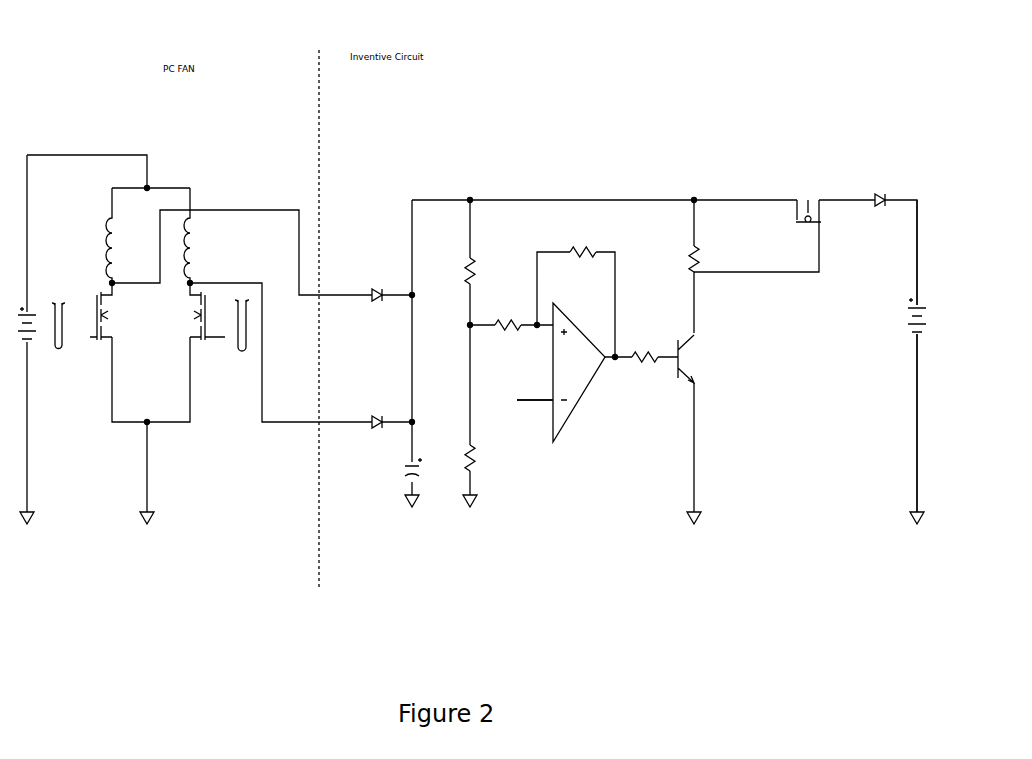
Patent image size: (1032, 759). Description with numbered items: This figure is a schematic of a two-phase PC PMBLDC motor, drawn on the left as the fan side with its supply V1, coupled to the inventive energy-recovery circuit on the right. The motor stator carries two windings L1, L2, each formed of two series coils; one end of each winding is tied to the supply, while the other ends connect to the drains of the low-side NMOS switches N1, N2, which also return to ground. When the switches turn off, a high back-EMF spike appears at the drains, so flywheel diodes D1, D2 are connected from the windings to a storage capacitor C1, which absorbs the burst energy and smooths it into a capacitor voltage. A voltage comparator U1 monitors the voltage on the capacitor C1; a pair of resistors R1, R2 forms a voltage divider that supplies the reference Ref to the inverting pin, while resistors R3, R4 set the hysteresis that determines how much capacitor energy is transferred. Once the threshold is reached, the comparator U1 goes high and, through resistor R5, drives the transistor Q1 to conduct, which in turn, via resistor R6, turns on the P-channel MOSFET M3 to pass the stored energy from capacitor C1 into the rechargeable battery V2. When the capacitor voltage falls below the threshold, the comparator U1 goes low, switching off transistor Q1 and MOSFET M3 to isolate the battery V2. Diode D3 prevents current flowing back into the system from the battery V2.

The PC fan supply voltage source V1 is at (33, 333).
The winding L1 is at (117, 235).
The winding L2 is at (195, 235).
The NMOS transistor N1 is at (112, 311).
The NMOS transistor N2 is at (194, 311).
The flywheel diode D1 is at (375, 288).
The flywheel diode D2 is at (375, 415).
The storage capacitor C1 is at (416, 465).
The resistor R1 is at (477, 271).
The resistor R2 is at (477, 458).
The resistor R3 is at (508, 319).
The resistor R4 is at (583, 245).
The resistor R5 is at (645, 350).
The resistor R6 is at (700, 259).
The voltage comparator U1 is at (579, 372).
The reference Ref is at (534, 414).
The transistor Q1 is at (692, 359).
The P-channel MOSFET M3 is at (808, 198).
The diode D3 is at (879, 192).
The rechargeable battery V2 is at (924, 356).